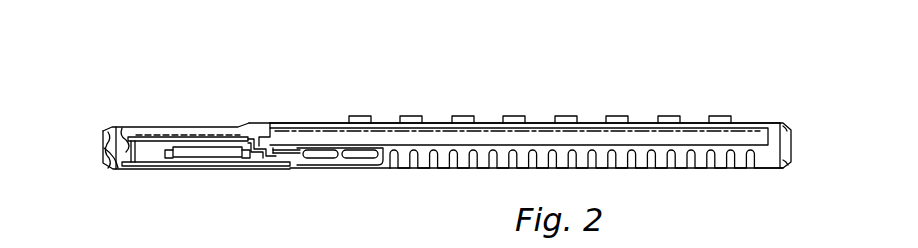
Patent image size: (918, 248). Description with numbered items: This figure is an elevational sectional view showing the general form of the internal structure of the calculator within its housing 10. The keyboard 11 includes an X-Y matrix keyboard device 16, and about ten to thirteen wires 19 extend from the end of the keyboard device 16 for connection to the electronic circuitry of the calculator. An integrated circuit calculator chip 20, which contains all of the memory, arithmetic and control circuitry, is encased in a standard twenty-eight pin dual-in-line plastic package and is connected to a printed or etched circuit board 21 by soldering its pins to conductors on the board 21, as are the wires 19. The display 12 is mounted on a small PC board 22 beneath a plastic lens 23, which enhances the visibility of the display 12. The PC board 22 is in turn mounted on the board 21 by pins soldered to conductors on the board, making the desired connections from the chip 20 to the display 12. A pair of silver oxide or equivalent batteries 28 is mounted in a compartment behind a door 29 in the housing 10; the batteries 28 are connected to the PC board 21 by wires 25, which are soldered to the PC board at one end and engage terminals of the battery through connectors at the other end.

The housing 10 is at (778, 123).
The keyboard 11 is at (323, 123).
The display 12 is at (160, 137).
The X-Y matrix keyboard device 16 is at (482, 133).
The wires 19 is at (266, 137).
The integrated circuit calculator chip 20 is at (213, 155).
The printed or etched circuit board 21 is at (148, 166).
The small PC board 22 is at (118, 166).
The plastic lens 23 is at (193, 134).
The wires 25 is at (289, 167).
The batteries 28 is at (360, 158).
The door 29 is at (378, 164).